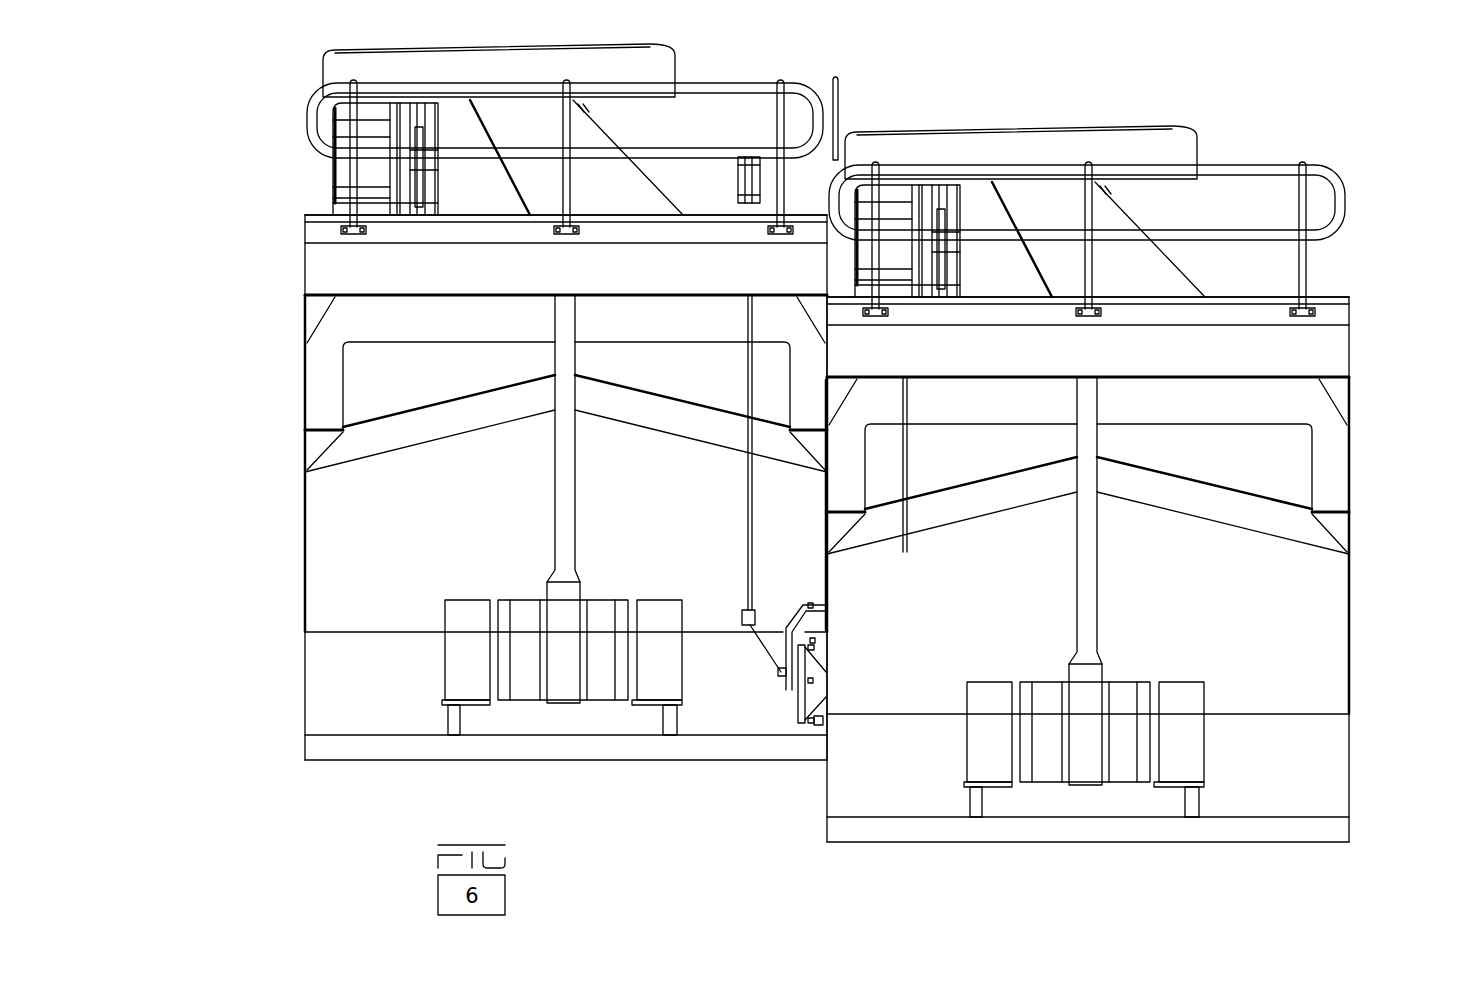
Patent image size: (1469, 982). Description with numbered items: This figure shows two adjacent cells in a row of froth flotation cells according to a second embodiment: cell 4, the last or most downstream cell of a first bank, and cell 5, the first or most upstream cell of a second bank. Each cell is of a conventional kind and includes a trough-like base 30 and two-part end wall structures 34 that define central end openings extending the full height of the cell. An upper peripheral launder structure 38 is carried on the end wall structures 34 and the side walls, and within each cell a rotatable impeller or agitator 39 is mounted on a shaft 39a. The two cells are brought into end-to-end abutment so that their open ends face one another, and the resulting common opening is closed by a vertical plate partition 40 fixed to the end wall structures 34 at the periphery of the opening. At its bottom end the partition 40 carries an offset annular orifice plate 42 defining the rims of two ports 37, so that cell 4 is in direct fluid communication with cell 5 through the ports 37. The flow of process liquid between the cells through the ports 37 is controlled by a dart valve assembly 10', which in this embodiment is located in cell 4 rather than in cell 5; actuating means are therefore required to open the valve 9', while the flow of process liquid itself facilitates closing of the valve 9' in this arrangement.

The cell 4 is at (268, 356).
The cell 5 is at (1383, 420).
The trough-like base 30 is at (305, 617).
The two-part end wall structure 34 is at (305, 533).
The port 37 is at (820, 720).
The upper peripheral launder structure 38 is at (330, 457).
The impeller 39 is at (527, 700).
The shaft 39a is at (557, 513).
The vertical plate partition 40 is at (828, 578).
The offset annular orifice plate 42 is at (807, 727).
The valve 9' is at (777, 713).
The dart valve assembly 10' is at (688, 557).